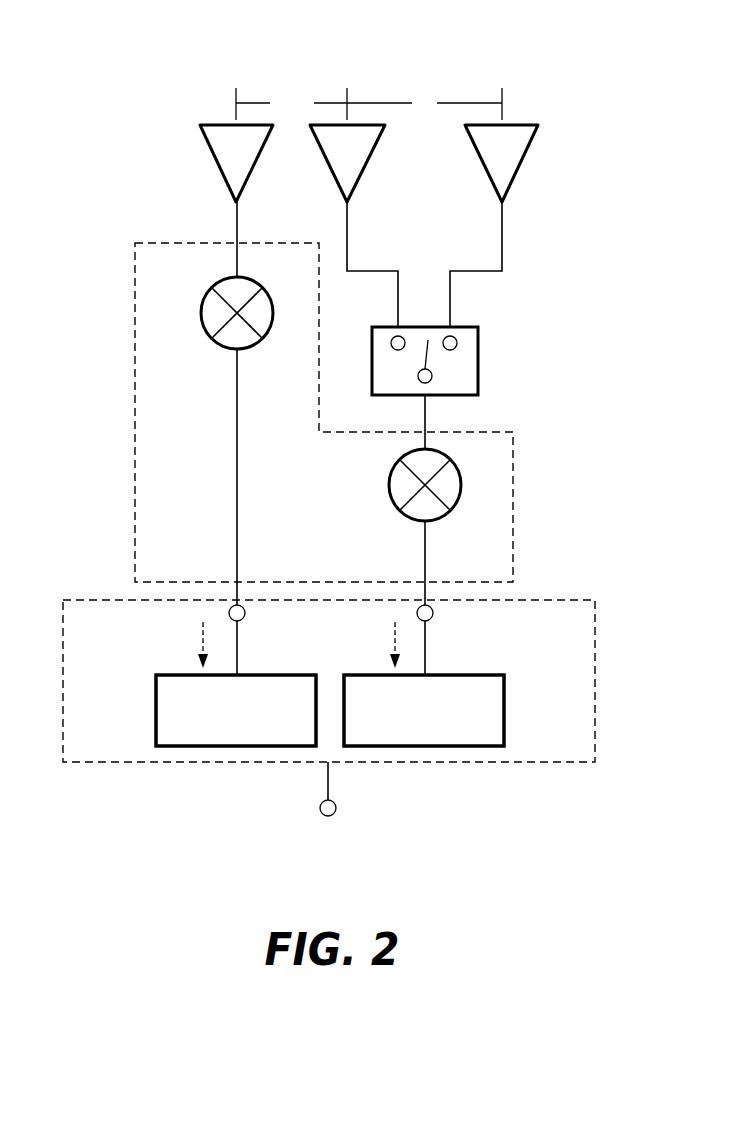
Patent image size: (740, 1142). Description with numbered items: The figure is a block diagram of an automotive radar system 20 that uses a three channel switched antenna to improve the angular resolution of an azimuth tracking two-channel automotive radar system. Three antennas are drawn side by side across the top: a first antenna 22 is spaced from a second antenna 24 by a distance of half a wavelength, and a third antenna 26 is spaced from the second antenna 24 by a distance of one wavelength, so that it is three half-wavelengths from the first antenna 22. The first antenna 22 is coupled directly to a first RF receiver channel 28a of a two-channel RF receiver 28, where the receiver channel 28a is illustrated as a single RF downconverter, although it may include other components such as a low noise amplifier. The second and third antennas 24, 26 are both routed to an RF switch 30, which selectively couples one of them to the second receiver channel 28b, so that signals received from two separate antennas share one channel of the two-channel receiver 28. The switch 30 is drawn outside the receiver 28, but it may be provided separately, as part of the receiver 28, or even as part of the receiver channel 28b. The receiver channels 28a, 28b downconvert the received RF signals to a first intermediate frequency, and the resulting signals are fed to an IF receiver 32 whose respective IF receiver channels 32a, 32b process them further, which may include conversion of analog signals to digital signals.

The automotive radar system 20 is at (576, 74).
The first antenna 22 is at (213, 157).
The second antenna 24 is at (337, 190).
The third antenna 26 is at (493, 190).
The two-channel RF receiver 28 is at (135, 333).
The first RF receiver channel 28a is at (201, 313).
The second RF receiver channel 28b is at (389, 485).
The RF switch 30 is at (480, 340).
The IF receiver 32 is at (595, 700).
The first IF receiver channel 32a is at (156, 698).
The second IF receiver channel 32b is at (504, 697).